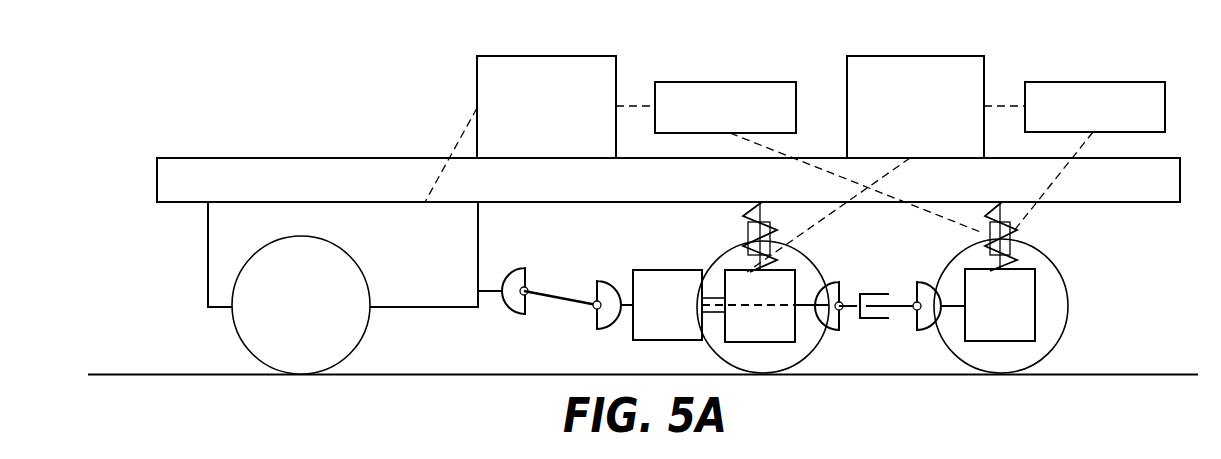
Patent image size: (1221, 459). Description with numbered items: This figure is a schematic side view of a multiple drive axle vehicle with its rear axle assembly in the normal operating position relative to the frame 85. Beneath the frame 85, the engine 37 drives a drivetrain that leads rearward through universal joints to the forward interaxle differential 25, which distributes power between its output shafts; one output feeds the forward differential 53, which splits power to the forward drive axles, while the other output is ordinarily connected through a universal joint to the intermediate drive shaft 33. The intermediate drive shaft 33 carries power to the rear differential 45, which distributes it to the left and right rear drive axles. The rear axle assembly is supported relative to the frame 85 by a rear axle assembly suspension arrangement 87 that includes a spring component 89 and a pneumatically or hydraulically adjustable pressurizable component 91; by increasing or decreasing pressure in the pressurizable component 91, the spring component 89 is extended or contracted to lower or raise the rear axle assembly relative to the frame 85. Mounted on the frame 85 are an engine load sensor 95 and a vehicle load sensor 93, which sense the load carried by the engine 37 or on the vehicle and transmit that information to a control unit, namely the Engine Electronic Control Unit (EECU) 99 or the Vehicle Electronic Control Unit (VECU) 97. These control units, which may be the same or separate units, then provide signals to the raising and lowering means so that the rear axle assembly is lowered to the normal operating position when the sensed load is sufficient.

The frame 85 is at (355, 157).
The engine load sensor 95 is at (476, 76).
The Engine Electronic Control Unit (EECU) 99 is at (681, 82).
The vehicle load sensor 93 is at (951, 57).
The Vehicle Electronic Control Unit (VECU) 97 is at (1131, 82).
The engine 37 is at (343, 288).
The forward interaxle differential 25 is at (667, 305).
The forward differential 53 is at (763, 307).
The rear differential 45 is at (1001, 306).
The intermediate drive shaft 33 is at (876, 336).
The rear axle assembly suspension arrangement 87 is at (992, 236).
The pressurizable component 91 is at (1013, 238).
The spring component 89 is at (1014, 251).